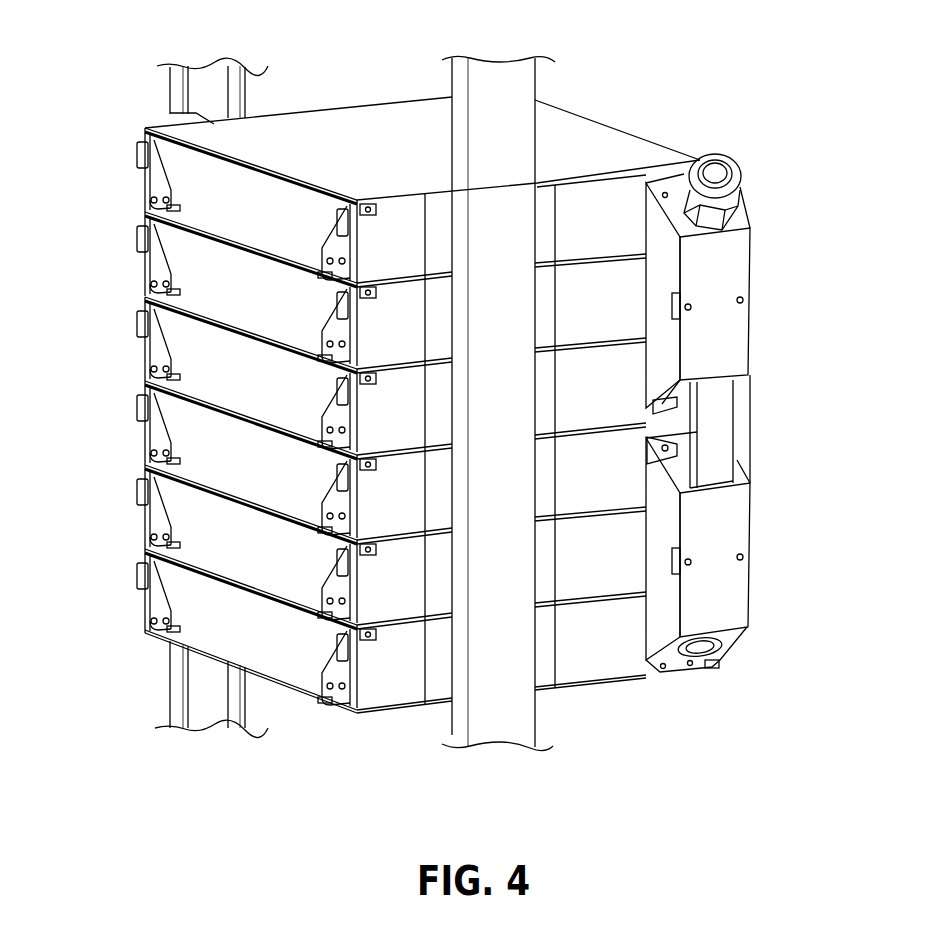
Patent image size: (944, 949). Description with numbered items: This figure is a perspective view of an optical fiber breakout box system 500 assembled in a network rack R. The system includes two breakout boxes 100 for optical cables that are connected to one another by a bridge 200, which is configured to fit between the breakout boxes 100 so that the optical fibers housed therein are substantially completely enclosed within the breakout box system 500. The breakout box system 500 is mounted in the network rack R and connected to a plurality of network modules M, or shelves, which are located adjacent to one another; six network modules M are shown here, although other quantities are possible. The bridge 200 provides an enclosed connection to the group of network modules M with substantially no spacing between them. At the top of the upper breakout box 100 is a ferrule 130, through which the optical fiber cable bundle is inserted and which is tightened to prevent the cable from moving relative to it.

The network rack R is at (492, 110).
The network modules M is at (217, 633).
The breakout box system 500 is at (736, 138).
The breakout box 100 is at (733, 332).
The ferrule 130 is at (743, 191).
The bridge 200 is at (722, 423).